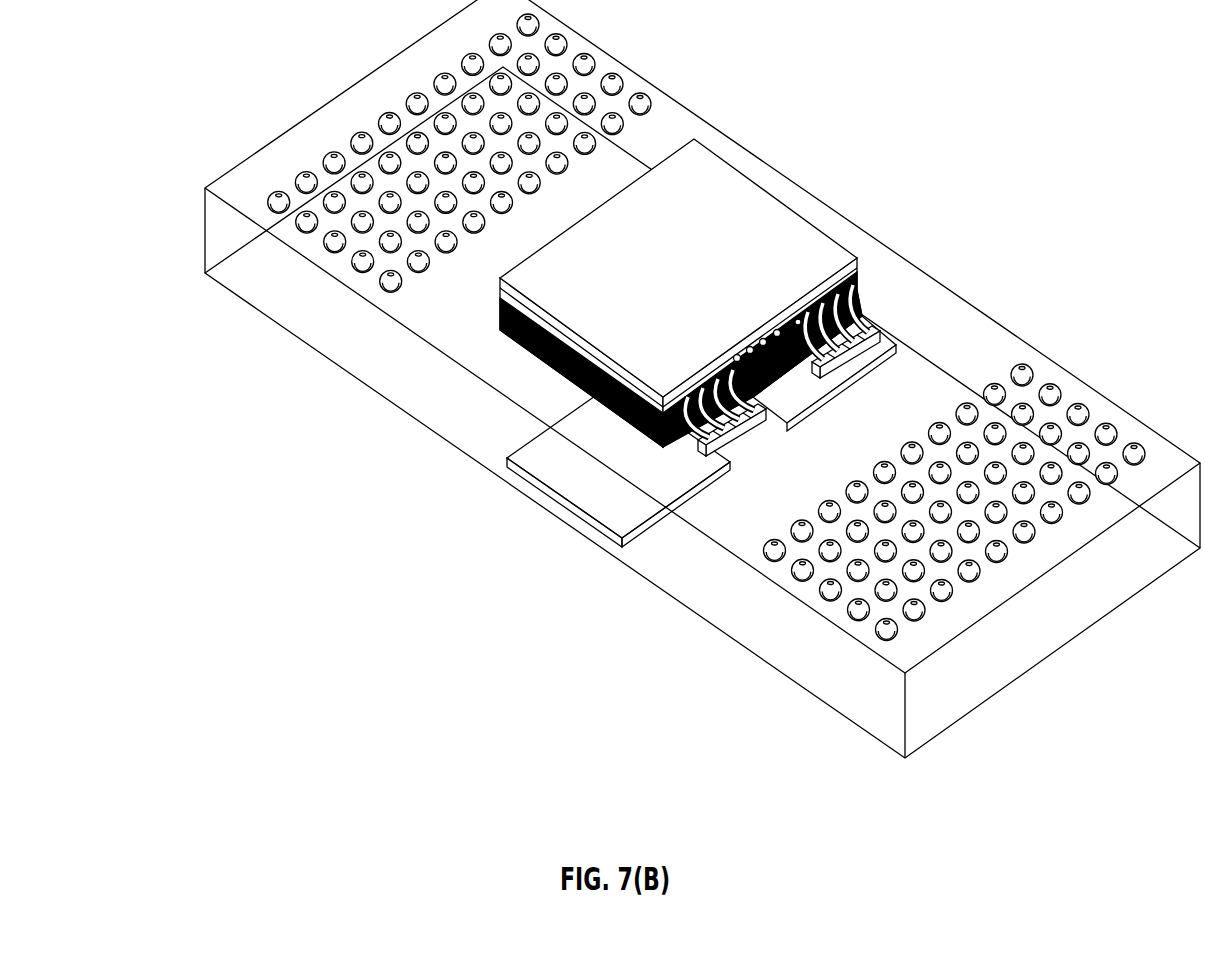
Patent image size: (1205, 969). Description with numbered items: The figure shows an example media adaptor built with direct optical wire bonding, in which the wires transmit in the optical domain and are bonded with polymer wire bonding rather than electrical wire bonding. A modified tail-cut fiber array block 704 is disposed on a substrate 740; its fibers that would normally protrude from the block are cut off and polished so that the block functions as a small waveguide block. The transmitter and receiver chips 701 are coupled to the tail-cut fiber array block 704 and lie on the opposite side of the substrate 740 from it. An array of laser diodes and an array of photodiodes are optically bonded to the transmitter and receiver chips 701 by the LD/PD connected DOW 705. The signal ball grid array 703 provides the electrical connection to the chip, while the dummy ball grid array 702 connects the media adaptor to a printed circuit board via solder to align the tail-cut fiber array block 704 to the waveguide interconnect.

The substrate 740 is at (387, 374).
The dummy ball grid array 702 is at (326, 250).
The signal ball grid array 703 is at (1041, 359).
The transmitter and receiver chips 701 is at (771, 421).
The tail-cut fiber array block 704 is at (705, 192).
The LD/PD connected DOW 705 is at (754, 391).